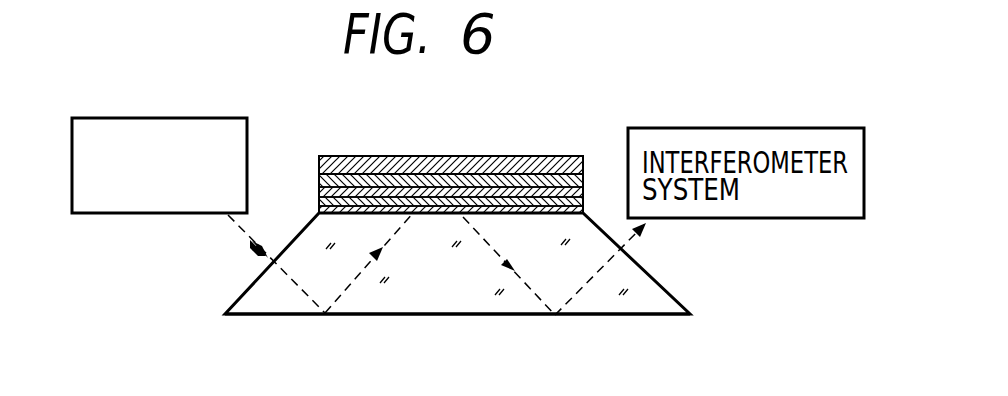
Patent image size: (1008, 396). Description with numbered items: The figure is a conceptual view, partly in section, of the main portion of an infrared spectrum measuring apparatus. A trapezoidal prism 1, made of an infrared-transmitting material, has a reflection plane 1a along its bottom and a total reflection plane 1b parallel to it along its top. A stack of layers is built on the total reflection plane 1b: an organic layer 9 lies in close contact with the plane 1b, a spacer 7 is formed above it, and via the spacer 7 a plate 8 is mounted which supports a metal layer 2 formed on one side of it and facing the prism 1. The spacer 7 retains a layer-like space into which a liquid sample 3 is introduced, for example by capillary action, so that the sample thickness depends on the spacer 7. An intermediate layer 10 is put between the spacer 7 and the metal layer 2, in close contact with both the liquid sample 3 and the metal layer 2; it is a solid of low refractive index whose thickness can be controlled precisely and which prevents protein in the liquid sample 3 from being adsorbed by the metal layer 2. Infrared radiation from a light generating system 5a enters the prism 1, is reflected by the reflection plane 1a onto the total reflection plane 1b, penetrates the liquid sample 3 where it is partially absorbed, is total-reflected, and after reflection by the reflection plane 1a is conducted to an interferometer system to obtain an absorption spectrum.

The trapezoidal prism 1 is at (452, 299).
The reflection plane 1a is at (258, 310).
The total reflection plane 1b is at (340, 212).
The metal layer 2 is at (335, 170).
The liquid sample 3 is at (490, 172).
The light generating system 5a is at (218, 118).
The spacer 7 is at (321, 201).
The plate 8 is at (562, 156).
The organic layer 9 is at (587, 208).
The intermediate layer 10 is at (584, 191).